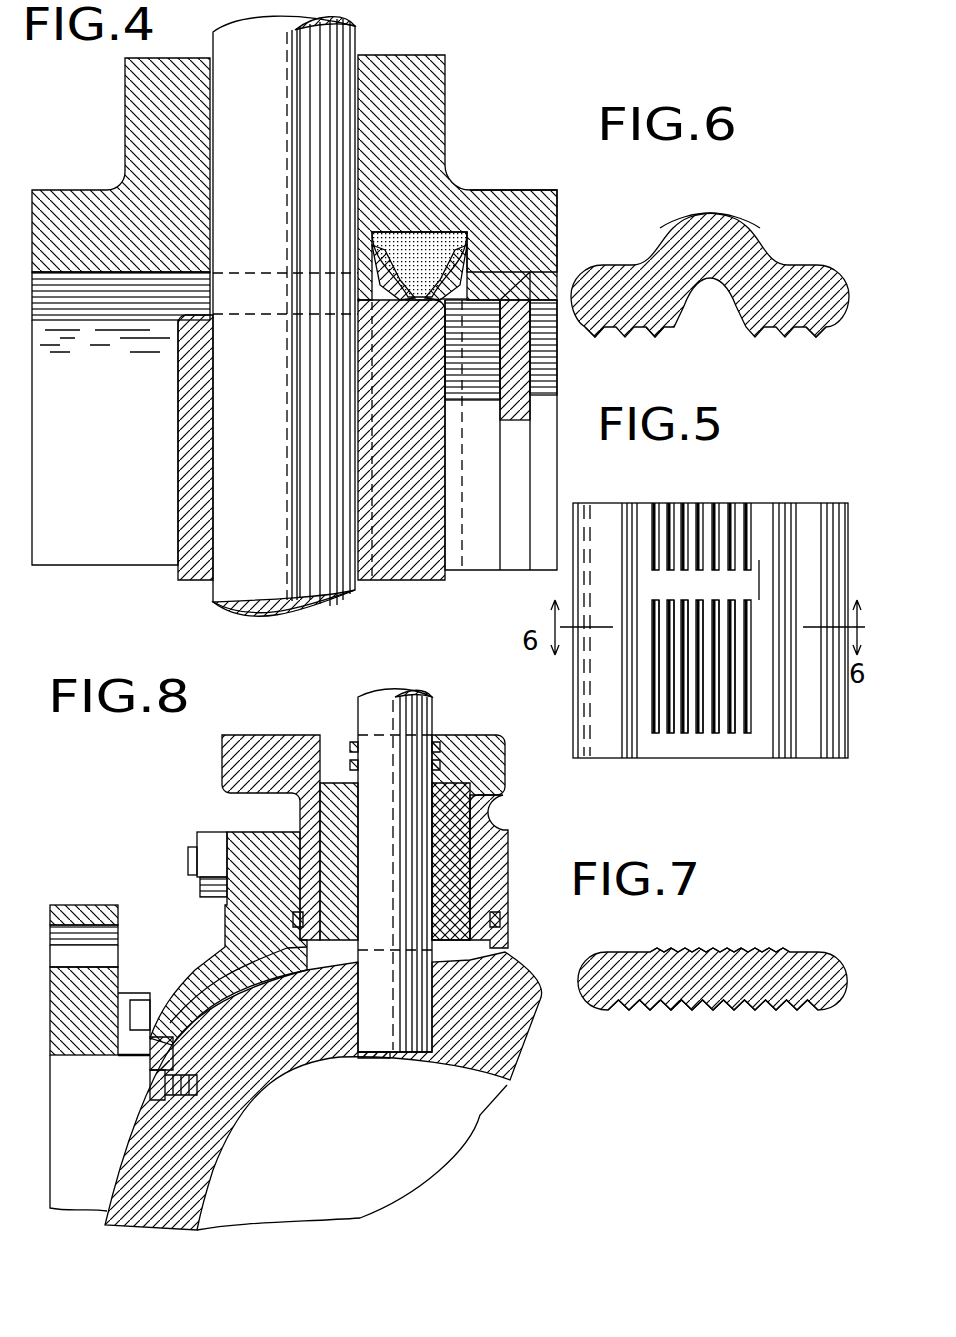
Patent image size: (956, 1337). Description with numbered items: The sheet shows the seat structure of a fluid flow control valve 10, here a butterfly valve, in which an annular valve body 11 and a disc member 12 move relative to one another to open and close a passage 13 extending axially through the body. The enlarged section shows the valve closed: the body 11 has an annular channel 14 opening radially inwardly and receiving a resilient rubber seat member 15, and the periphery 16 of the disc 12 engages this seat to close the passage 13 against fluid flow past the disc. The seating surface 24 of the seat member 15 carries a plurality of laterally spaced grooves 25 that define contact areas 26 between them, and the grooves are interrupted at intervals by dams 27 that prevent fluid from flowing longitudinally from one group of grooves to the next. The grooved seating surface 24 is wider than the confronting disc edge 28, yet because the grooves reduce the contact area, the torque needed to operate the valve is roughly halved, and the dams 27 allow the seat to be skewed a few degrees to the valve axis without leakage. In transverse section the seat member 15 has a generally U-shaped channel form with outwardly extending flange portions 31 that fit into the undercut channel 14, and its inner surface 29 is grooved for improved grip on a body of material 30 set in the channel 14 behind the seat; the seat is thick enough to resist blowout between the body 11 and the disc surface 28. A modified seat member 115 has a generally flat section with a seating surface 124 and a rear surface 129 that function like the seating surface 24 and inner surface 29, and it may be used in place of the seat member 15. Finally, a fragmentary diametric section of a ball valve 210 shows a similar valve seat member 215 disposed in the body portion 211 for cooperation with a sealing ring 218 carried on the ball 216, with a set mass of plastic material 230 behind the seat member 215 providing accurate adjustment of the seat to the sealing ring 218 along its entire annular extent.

In FIG. 4, the fluid flow control valve 10 is at (461, 105).
In FIG. 4, the valve body 11 is at (484, 212).
In FIG. 4, the disc member 12 is at (422, 575).
In FIG. 4, the passage 13 is at (120, 509).
In FIG. 4, the annular channel 14 is at (490, 205).
In FIG. 4, the seat member 15 is at (467, 258).
In FIG. 6, the seat member 15 is at (778, 247).
In FIG. 5, the seat member 15 is at (604, 509).
In FIG. 4, the periphery of the disc 16 is at (432, 352).
In FIG. 4, the seating surface 24 is at (456, 298).
In FIG. 6, the seating surface 24 is at (741, 221).
In FIG. 5, the seating surface 24 is at (758, 548).
In FIG. 5, the grooves 25 is at (710, 590).
In FIG. 5, the contact areas 26 is at (729, 505).
In FIG. 5, the dams 27 is at (667, 740).
In FIG. 4, the disc edge 28 is at (405, 302).
In FIG. 4, the inner surface 29 is at (431, 266).
In FIG. 6, the inner surface 29 is at (651, 329).
In FIG. 4, the body of material 30 is at (406, 250).
In FIG. 6, the flange portions 31 is at (587, 329).
In FIG. 7, the modified seat member 115 is at (790, 960).
In FIG. 7, the seating surface 124 is at (717, 954).
In FIG. 7, the rear surface 129 is at (730, 1012).
In FIG. 8, the ball valve 210 is at (191, 828).
In FIG. 8, the body portion 211 is at (207, 962).
In FIG. 8, the valve seat member 215 is at (136, 1040).
In FIG. 8, the ball 216 is at (240, 1105).
In FIG. 8, the sealing ring 218 is at (173, 1040).
In FIG. 8, the set mass of plastic material 230 is at (133, 1033).